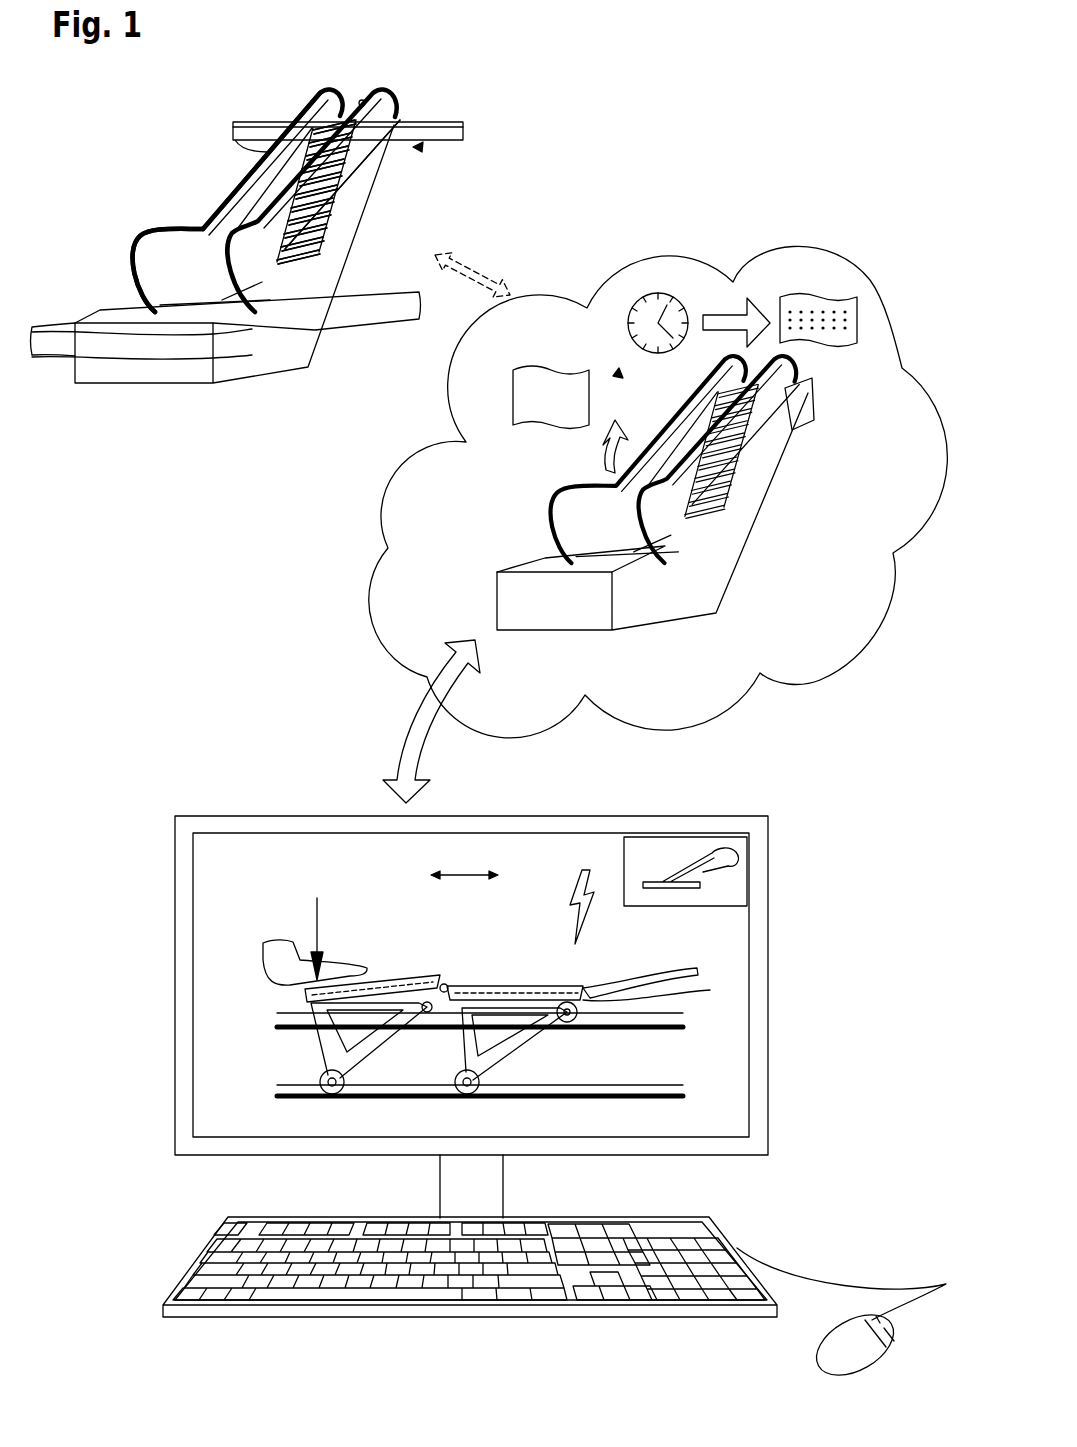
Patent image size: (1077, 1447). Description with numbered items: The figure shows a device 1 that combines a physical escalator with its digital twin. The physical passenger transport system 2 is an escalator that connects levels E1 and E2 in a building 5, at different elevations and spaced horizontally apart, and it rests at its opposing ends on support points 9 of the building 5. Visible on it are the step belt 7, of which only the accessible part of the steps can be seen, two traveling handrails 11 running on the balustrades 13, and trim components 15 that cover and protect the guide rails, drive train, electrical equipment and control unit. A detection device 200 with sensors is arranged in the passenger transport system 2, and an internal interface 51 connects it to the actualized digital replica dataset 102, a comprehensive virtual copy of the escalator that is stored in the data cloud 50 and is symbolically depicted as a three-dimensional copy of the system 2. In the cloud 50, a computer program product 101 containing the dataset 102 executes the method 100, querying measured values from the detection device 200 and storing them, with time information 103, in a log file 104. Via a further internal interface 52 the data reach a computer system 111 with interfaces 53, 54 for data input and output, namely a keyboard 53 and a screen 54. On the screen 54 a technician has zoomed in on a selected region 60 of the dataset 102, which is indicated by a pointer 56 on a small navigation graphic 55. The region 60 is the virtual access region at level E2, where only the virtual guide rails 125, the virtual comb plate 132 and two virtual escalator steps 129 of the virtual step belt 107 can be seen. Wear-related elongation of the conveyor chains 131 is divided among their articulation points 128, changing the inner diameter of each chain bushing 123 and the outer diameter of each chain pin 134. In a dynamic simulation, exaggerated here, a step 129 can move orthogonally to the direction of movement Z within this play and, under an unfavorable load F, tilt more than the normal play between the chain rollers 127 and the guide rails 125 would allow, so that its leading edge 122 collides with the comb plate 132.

The device 1 is at (618, 373).
The physical passenger transport system 2 is at (186, 197).
The building 5 is at (408, 122).
The step belt 7 is at (287, 179).
The support points 9 is at (108, 344).
The handrails 11 is at (233, 195).
The balustrades 13 is at (151, 251).
The trim components 15 is at (373, 183).
The data cloud 50 is at (827, 599).
The internal interface 51 is at (477, 268).
The internal interface 52 is at (418, 723).
The interface 53 is at (228, 1220).
The screen 54 is at (175, 990).
The navigation graphic 55 is at (685, 840).
The pointer 56 is at (749, 856).
The selected region 60 is at (680, 1115).
The method 100 is at (569, 412).
The computer program product 101 is at (506, 394).
The actualized digital replica dataset 102 is at (786, 490).
The time information 103 is at (667, 293).
The log file 104 is at (810, 296).
The virtual step belt 107 is at (735, 429).
The computer system 111 is at (789, 996).
The leading edge 122 is at (460, 972).
The chain bushing 123 is at (431, 1036).
The virtual guide rails 125 is at (672, 1019).
The chain rollers 127 is at (689, 994).
The articulation points 128 is at (423, 1040).
The virtual escalator steps 129 is at (413, 968).
The conveyor chains 131 is at (569, 1015).
The virtual comb plate 132 is at (685, 965).
The chain pin 134 is at (567, 1022).
The detection device 200 is at (362, 100).
The level E1 is at (142, 320).
The level E2 is at (350, 106).
The load F is at (318, 924).
The direction of movement Z is at (464, 861).